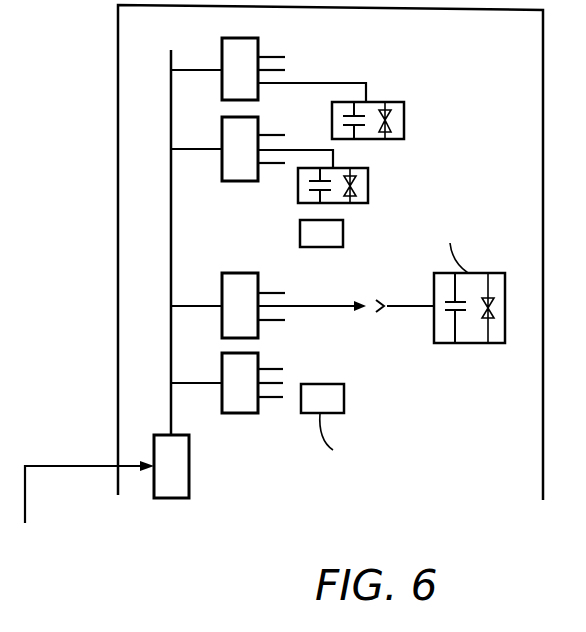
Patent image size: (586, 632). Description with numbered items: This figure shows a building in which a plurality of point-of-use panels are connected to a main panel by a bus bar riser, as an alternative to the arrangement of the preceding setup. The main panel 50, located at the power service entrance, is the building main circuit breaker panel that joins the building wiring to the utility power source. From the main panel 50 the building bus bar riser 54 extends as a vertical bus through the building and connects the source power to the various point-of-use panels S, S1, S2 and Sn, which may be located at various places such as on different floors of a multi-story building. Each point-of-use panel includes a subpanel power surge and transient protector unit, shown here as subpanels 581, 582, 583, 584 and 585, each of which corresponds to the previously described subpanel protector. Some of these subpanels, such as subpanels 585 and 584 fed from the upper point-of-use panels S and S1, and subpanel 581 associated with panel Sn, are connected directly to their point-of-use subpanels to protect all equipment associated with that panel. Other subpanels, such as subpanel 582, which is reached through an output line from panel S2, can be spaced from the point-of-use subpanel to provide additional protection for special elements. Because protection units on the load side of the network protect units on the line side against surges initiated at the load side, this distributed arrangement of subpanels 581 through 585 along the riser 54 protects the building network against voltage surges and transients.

The main panel 50 is at (173, 483).
The bus bar riser 54 is at (171, 407).
The point-of-use panel S is at (250, 37).
The point-of-use panel S1 is at (242, 172).
The point-of-use panel S2 is at (243, 292).
The point-of-use panel Sn is at (244, 403).
The subpanel power surge and transient protector unit 581 is at (344, 386).
The subpanel power surge and transient protector unit 582 is at (469, 343).
The subpanel power surge and transient protector unit 583 is at (322, 247).
The subpanel power surge and transient protector unit 584 is at (368, 186).
The subpanel power surge and transient protector unit 585 is at (395, 100).